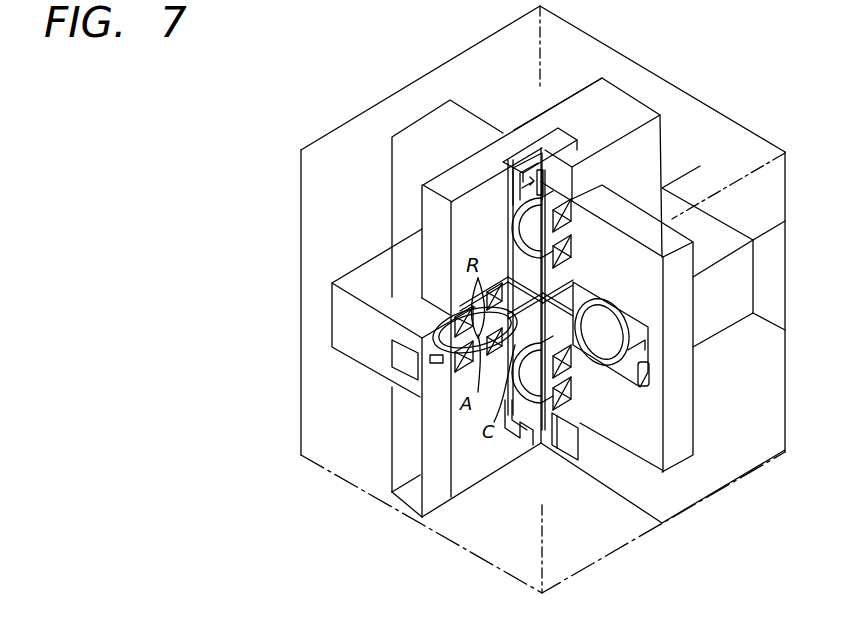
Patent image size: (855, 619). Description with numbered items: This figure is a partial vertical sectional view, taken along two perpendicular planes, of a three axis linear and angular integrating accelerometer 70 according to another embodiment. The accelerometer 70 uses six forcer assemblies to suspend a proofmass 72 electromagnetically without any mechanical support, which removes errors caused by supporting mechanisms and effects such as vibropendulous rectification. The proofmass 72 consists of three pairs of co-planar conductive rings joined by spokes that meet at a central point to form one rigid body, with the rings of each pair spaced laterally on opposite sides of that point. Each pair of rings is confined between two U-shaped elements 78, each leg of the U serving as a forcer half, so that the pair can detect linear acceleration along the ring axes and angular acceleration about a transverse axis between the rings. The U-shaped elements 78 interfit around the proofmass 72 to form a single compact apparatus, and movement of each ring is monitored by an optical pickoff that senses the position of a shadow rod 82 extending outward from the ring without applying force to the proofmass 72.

The three axis linear and angular integrating accelerometer 70 is at (659, 62).
The proofmass 72 is at (535, 408).
The U-shaped element 78 is at (642, 218).
The shadow rod 82 is at (434, 368).